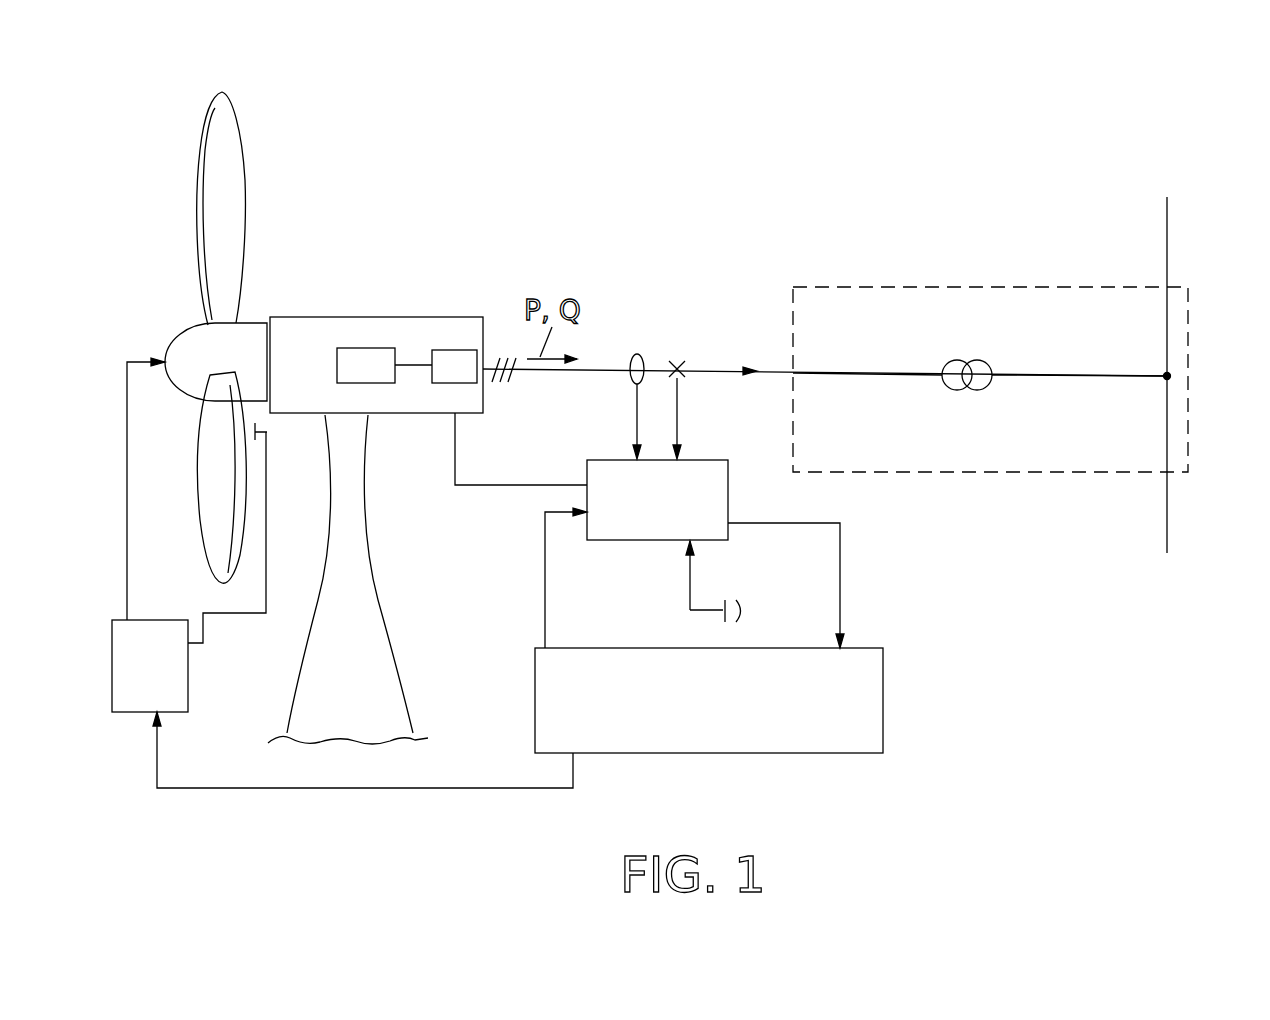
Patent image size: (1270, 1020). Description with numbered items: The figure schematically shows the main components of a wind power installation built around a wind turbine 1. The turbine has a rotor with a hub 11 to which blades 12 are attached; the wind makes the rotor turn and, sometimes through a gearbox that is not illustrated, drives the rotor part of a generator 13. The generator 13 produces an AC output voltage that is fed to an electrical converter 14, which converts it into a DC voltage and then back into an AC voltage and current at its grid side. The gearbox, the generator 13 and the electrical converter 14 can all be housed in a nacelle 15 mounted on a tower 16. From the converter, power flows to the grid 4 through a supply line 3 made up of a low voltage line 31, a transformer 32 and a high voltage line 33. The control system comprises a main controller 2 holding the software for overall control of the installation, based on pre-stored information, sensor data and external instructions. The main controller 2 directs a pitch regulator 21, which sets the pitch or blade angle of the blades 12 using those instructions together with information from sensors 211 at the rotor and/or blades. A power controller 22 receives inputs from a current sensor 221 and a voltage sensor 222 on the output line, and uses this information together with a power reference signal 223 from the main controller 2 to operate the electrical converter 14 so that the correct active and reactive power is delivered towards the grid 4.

The wind turbine 1 is at (358, 167).
The hub 11 is at (192, 350).
The blades 12 is at (212, 213).
The generator 13 is at (377, 347).
The electrical converter 14 is at (462, 350).
The nacelle 15 is at (292, 320).
The tower 16 is at (367, 605).
The main controller 2 is at (709, 700).
The pitch regulator 21 is at (342, 573).
The sensors 211 is at (262, 442).
The power controller 22 is at (617, 540).
The current sensor 221 is at (642, 353).
The voltage sensor 222 is at (680, 368).
The power reference signal 223 is at (543, 628).
The supply line 3 is at (868, 287).
The low voltage line 31 is at (862, 377).
The transformer 32 is at (967, 390).
The high voltage line 33 is at (1073, 378).
The grid 4 is at (1168, 537).